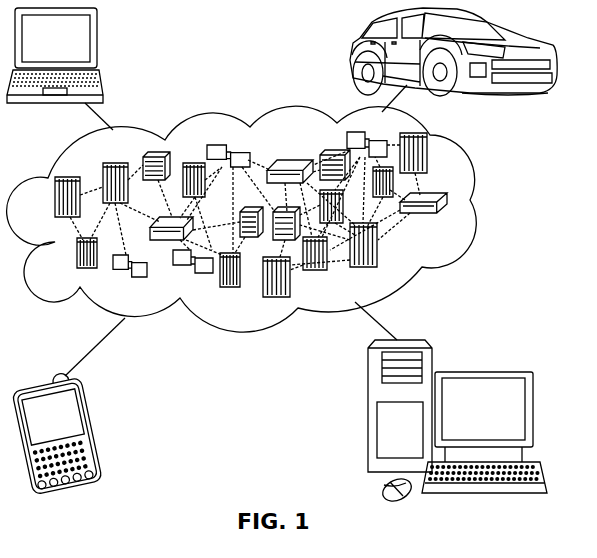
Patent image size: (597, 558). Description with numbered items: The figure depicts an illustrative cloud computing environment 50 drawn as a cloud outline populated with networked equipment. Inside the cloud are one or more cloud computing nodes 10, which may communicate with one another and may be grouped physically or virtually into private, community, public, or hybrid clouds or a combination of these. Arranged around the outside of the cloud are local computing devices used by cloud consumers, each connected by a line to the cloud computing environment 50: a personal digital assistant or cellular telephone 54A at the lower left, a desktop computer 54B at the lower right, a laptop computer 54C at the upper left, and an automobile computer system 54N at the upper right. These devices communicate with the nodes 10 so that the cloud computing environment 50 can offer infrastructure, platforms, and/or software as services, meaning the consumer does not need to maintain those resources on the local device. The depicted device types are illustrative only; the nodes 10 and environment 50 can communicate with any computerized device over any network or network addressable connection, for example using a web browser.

The cloud computing node 10 is at (453, 222).
The cloud computing environment 50 is at (479, 201).
The personal digital assistant or cellular telephone 54A is at (90, 427).
The desktop computer 54B is at (482, 372).
The laptop computer 54C is at (97, 43).
The automobile computer system 54N is at (353, 55).